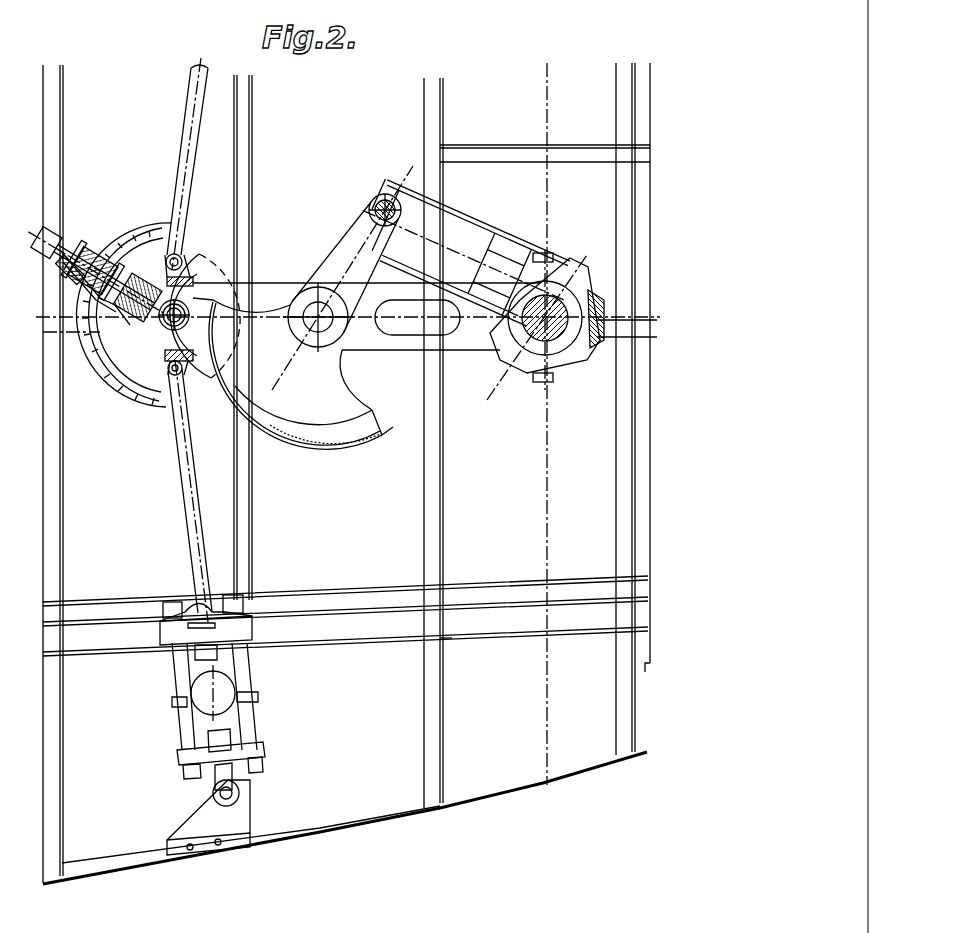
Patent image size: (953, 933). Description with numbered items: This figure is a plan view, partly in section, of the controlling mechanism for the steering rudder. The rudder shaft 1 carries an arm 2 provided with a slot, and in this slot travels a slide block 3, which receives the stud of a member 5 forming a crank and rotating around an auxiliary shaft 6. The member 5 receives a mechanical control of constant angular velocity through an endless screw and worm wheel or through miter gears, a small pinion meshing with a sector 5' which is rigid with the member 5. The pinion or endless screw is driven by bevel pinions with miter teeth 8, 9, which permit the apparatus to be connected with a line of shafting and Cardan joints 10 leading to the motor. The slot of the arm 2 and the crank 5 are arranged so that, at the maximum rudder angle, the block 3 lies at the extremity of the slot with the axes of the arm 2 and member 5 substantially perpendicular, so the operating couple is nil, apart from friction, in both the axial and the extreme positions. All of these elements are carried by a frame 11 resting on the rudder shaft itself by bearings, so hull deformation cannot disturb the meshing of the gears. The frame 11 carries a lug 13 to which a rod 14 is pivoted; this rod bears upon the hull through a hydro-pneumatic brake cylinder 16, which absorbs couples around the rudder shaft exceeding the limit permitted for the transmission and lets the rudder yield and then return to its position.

The rudder shaft 1 is at (500, 380).
The arm 2 is at (452, 245).
The slide block 3 is at (380, 195).
The member forming a crank 5 is at (342, 278).
The sector 5' is at (301, 391).
The auxiliary shaft 6 is at (312, 305).
The bevel pinion with miter teeth 8 is at (125, 356).
The bevel pinion with miter teeth 9 is at (115, 238).
The line of shafting and Cardan joints 10 is at (66, 243).
The frame 11 is at (370, 345).
The lug 13 is at (182, 242).
The rod 14 is at (197, 101).
The hydro-pneumatic brake cylinder 16 is at (205, 697).